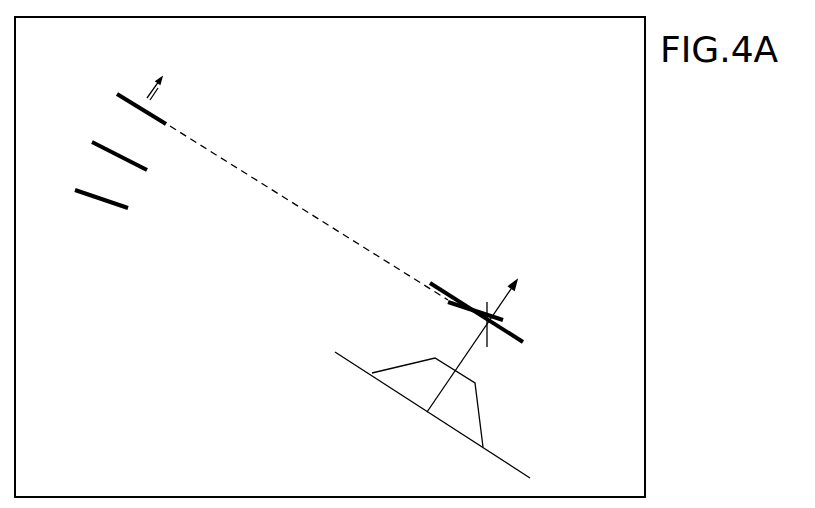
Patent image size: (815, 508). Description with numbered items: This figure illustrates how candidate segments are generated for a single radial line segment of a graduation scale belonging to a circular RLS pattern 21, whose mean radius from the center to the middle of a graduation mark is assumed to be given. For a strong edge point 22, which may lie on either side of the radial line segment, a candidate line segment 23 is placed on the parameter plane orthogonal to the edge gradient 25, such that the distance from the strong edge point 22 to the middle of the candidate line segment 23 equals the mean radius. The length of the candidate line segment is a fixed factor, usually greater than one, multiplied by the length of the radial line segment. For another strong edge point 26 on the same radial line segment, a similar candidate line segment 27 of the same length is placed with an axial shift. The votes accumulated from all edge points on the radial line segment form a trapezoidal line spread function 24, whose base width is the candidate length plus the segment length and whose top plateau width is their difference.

The circular RLS pattern 21 is at (75, 174).
The strong edge point 22 is at (165, 103).
The candidate line segment 23 is at (524, 327).
The trapezoidal line spread function 24 is at (491, 412).
The edge gradient 25 is at (147, 67).
The another strong edge point 26 is at (180, 125).
The similar candidate line segment 27 is at (550, 363).